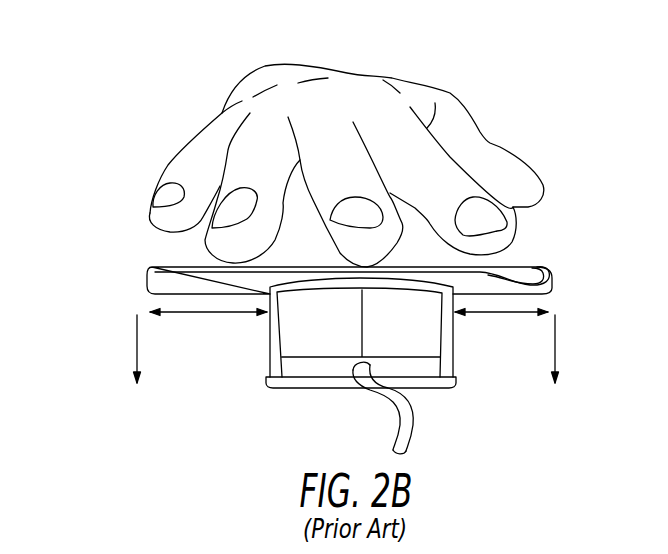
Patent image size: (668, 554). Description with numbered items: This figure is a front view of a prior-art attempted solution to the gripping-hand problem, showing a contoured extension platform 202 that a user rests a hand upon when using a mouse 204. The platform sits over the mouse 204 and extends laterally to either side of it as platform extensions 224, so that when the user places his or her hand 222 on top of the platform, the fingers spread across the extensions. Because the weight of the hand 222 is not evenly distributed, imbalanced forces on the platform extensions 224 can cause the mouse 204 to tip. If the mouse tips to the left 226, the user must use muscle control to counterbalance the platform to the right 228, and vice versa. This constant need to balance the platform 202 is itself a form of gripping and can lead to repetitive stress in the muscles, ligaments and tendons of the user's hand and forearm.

The contoured extension platform 202 is at (552, 281).
The mouse 204 is at (423, 370).
The hand 222 is at (510, 95).
The platform extensions 224 is at (349, 330).
The tip to the left 226 is at (115, 349).
The counterbalance to the right 228 is at (573, 349).